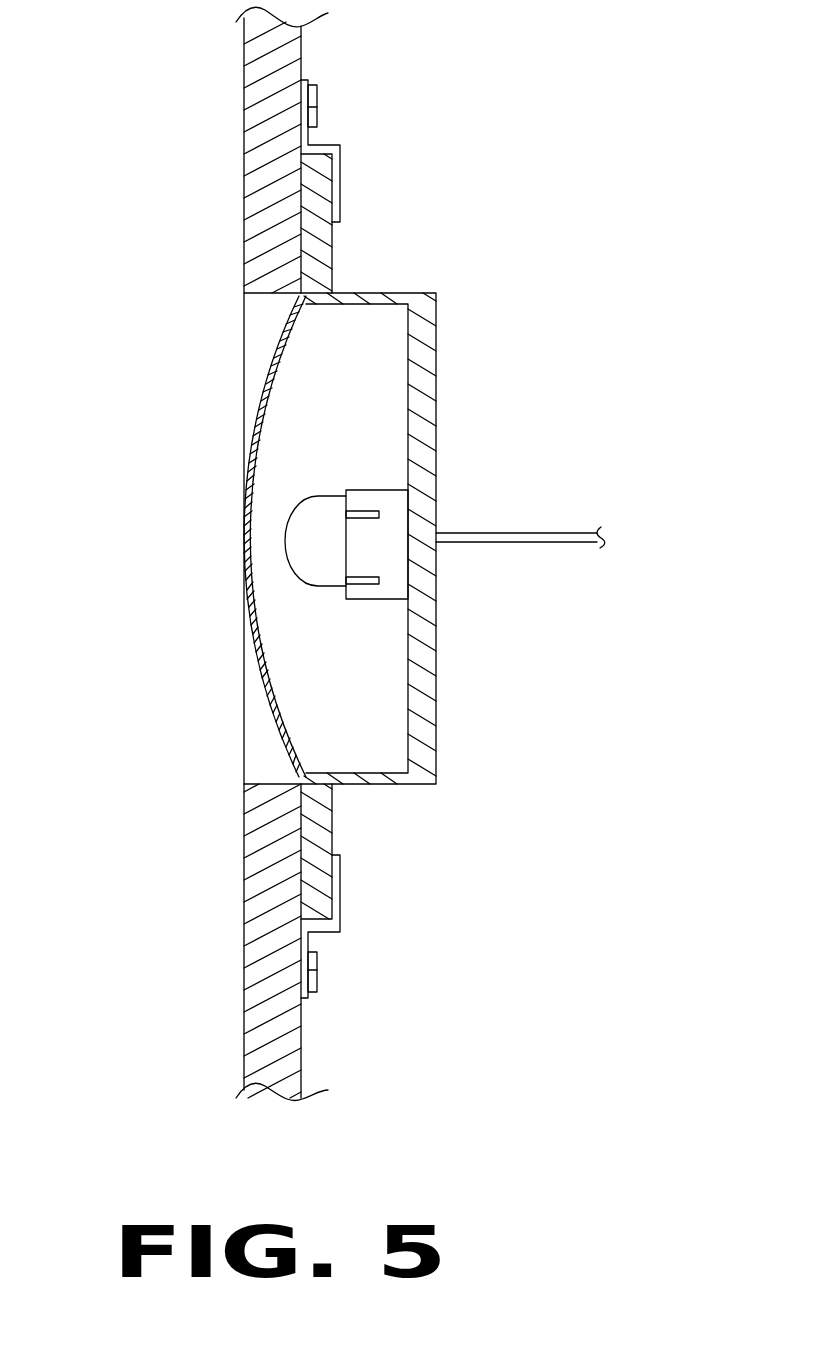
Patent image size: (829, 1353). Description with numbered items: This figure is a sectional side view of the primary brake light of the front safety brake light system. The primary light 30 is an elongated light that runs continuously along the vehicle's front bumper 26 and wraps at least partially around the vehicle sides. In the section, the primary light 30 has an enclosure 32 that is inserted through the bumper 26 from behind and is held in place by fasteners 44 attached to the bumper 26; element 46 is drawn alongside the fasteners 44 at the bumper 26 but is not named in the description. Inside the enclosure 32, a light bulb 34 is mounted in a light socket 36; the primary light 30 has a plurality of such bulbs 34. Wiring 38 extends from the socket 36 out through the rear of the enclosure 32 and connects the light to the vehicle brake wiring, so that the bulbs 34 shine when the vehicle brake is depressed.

The front bumper 26 is at (243, 95).
The primary light 30 is at (436, 367).
The enclosure 32 is at (257, 657).
The bulb 34 is at (292, 543).
The light socket 36 is at (372, 602).
The wiring 38 is at (545, 533).
The fastener 44 is at (340, 213).
The fastener 46 is at (320, 107).